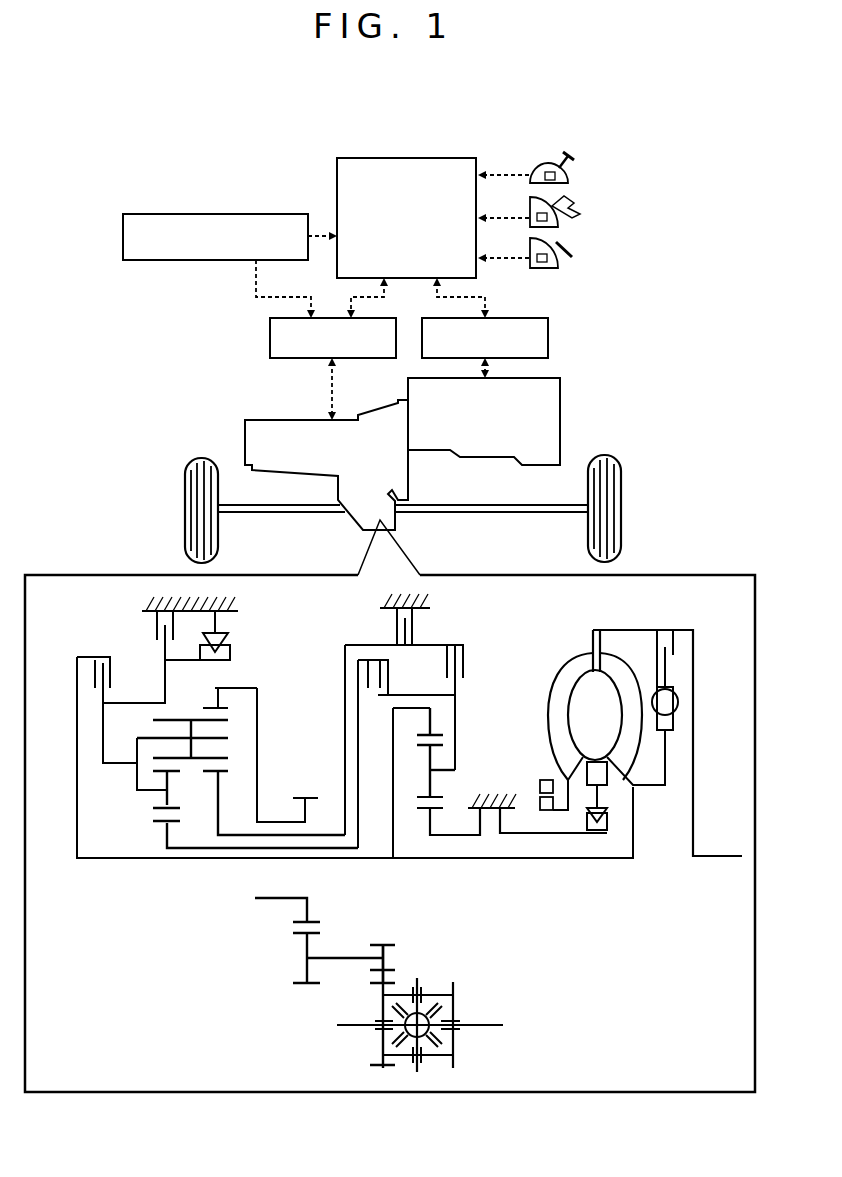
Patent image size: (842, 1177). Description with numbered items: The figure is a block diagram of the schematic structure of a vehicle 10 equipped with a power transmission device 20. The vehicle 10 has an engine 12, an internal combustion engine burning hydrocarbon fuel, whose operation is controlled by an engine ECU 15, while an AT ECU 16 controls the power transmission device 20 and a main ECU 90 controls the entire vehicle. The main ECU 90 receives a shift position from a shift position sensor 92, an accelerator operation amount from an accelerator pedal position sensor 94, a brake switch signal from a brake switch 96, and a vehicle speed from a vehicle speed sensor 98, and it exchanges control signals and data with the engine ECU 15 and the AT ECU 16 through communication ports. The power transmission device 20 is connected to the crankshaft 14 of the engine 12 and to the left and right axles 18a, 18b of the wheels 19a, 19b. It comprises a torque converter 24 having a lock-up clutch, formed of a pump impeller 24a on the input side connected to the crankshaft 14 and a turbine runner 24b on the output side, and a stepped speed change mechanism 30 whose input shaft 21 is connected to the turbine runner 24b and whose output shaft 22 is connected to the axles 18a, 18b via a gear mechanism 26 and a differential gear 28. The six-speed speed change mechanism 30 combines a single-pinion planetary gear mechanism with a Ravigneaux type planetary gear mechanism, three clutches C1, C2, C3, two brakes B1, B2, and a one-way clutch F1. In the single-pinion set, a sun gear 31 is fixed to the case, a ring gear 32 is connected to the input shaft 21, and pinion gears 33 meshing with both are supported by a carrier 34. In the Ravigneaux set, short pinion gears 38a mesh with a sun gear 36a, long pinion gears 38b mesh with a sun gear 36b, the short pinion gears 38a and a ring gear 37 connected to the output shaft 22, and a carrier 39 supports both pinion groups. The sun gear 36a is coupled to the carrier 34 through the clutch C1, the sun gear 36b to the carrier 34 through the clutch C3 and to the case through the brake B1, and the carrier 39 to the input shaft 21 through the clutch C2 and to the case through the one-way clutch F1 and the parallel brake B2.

The vehicle 10 is at (102, 173).
The engine 12 is at (560, 412).
The crankshaft 14 is at (705, 858).
The engine electronic control unit 15 is at (524, 318).
The automatic transmission electronic control unit 16 is at (270, 340).
The axle 18a is at (468, 492).
The axle 18b is at (252, 506).
The wheel 19a is at (621, 504).
The wheel 19b is at (185, 516).
The power transmission device 20 is at (245, 446).
The input shaft 21 is at (592, 858).
The output shaft 22 is at (287, 822).
The torque converter 24 is at (575, 641).
The pump impeller 24a is at (550, 697).
The turbine runner 24b is at (635, 661).
The gear mechanism 26 is at (402, 951).
The differential gear 28 is at (457, 987).
The speed change mechanism 30 is at (216, 907).
The sun gear 31 is at (430, 810).
The ring gear 32 is at (440, 732).
The pinion gears 33 is at (445, 797).
The carrier 34 is at (450, 770).
The sun gear 36a is at (167, 826).
The sun gear 36b is at (213, 773).
The ring gear 37 is at (220, 702).
The short pinion gears 38a is at (167, 797).
The long pinion gears 38b is at (175, 718).
The carrier 39 is at (103, 753).
The main electronic control unit 90 is at (337, 188).
The shift position sensor 92 is at (562, 178).
The accelerator pedal position sensor 94 is at (562, 220).
The brake switch 96 is at (562, 260).
The vehicle speed sensor 98 is at (123, 232).
The brake B1 is at (412, 616).
The brake B2 is at (157, 616).
The clutch C1 is at (358, 676).
The clutch C2 is at (95, 665).
The clutch C3 is at (463, 652).
The one-way clutch F1 is at (220, 636).